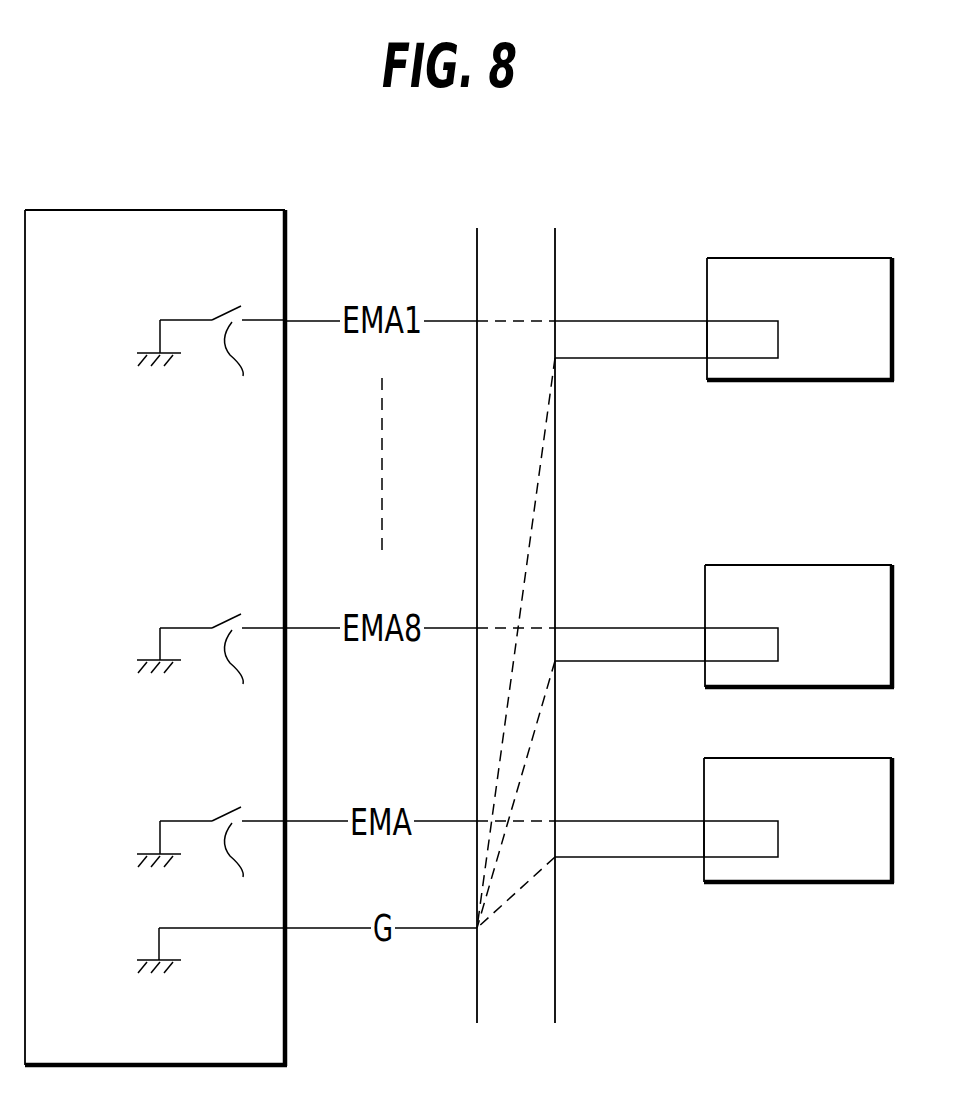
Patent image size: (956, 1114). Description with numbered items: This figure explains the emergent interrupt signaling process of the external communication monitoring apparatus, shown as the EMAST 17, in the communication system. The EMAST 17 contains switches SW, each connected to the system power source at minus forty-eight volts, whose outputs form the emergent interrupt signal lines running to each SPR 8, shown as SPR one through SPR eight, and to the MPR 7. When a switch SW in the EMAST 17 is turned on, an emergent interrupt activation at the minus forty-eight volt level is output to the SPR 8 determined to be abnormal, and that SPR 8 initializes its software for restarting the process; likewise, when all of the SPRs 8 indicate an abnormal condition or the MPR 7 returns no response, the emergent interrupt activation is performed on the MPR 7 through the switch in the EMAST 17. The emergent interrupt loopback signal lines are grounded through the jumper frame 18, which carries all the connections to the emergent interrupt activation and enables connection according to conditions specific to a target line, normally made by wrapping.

The external communication monitoring apparatus 17 is at (133, 230).
The jumper frame 18 is at (530, 243).
The SPR 8 is at (741, 257).
The MPR 7 is at (742, 883).